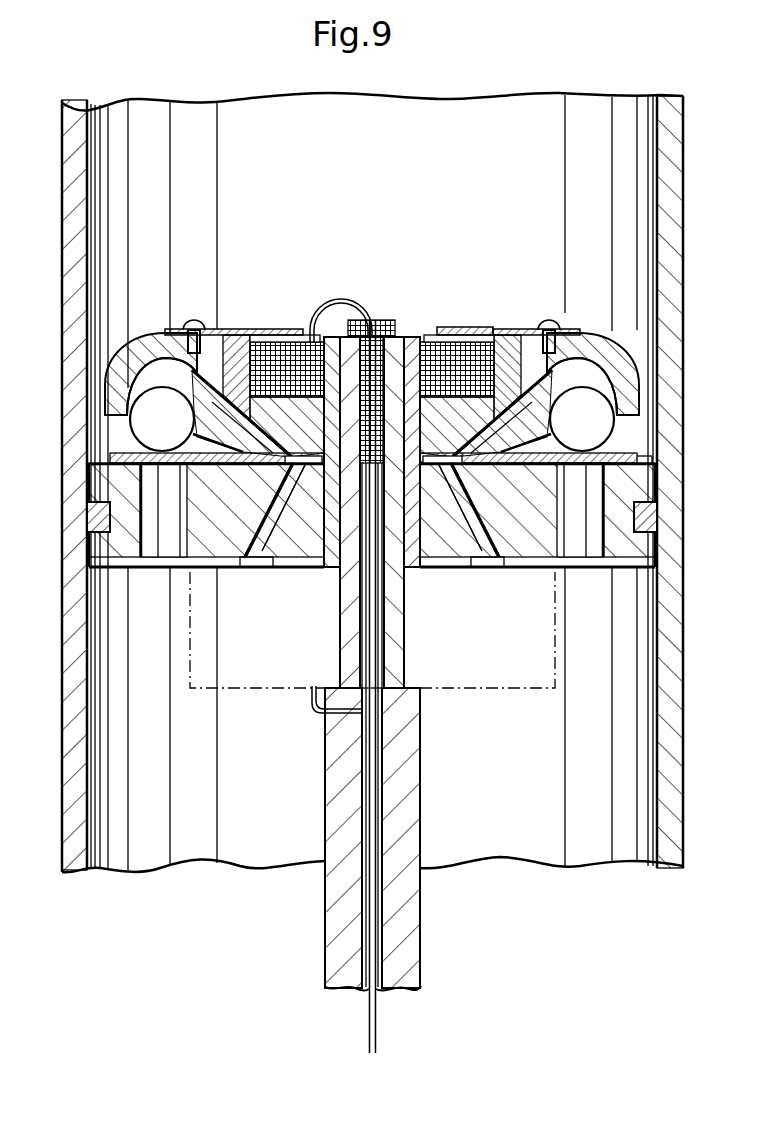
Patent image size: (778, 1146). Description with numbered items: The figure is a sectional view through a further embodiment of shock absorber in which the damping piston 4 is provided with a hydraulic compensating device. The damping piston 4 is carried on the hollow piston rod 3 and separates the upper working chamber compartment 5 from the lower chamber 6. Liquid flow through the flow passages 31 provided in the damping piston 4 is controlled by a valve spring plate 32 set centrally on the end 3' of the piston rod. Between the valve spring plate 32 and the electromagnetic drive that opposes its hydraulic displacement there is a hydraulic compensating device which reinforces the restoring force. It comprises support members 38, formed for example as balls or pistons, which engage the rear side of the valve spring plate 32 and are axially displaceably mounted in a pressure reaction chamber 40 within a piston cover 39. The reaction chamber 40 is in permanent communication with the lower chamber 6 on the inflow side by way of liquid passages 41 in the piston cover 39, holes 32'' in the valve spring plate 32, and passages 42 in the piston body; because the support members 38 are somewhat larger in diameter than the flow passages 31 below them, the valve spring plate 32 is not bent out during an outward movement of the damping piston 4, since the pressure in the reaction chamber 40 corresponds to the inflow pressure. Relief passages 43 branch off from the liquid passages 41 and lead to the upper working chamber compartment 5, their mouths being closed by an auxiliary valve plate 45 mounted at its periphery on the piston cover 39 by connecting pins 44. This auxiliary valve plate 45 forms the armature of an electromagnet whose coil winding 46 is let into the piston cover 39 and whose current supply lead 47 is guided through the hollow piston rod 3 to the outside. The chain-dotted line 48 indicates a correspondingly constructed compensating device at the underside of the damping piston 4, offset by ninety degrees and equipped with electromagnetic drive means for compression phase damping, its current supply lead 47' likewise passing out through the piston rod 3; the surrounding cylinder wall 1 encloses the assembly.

The tube wall 1 is at (672, 692).
The hollow piston rod 3 is at (396, 839).
The end of the piston rod 3' is at (389, 512).
The damping piston 4 is at (640, 486).
The upper working chamber compartment 5 is at (628, 185).
The lower chamber 6 is at (645, 792).
The flow passages 31 is at (140, 493).
The valve spring plate 32 is at (421, 458).
The holes in the valve spring plate 32'' is at (376, 535).
The support members 38 is at (160, 416).
The piston cover 39 is at (152, 343).
The pressure reaction chamber 40 is at (148, 362).
The liquid passages 41 is at (228, 352).
The passages in the piston body 42 is at (266, 535).
The relief passages 43 is at (222, 348).
The connecting pins 44 is at (550, 323).
The auxiliary valve plate 45 is at (457, 327).
The coil winding 46 is at (290, 352).
The current supply lead 47 is at (352, 653).
The current supply lead 47' is at (321, 724).
The chain-dotted line 48 is at (556, 620).